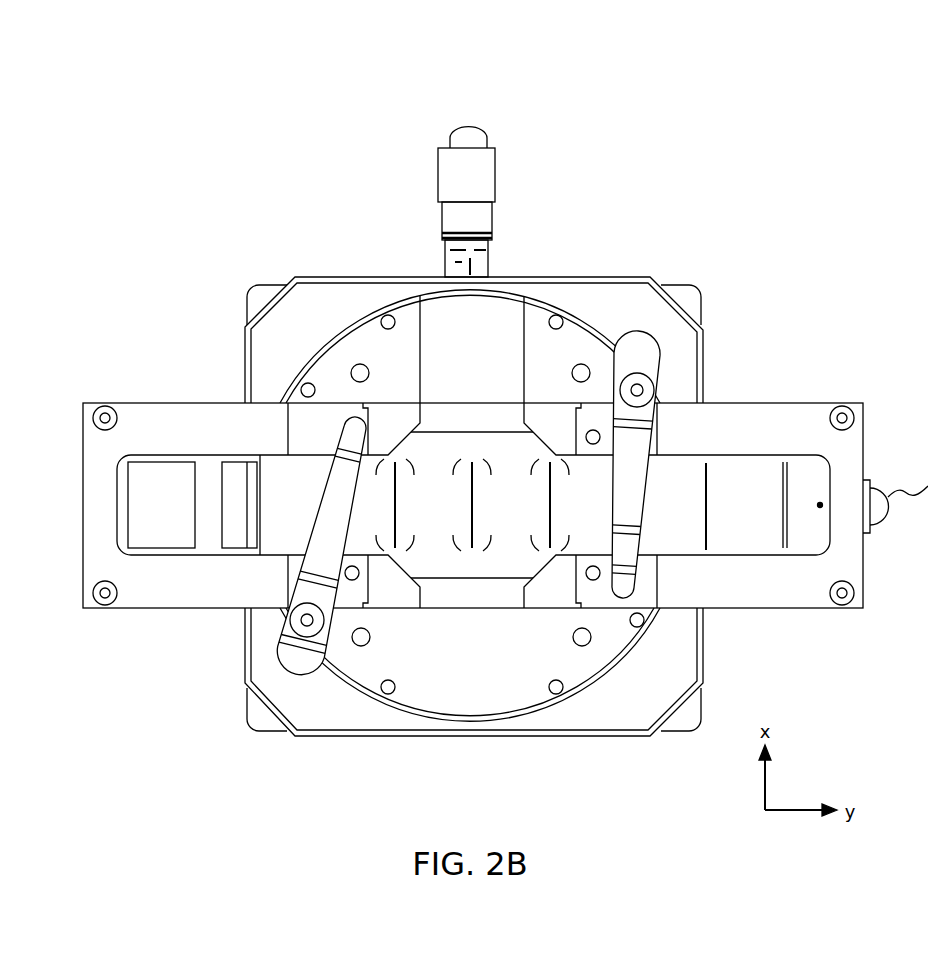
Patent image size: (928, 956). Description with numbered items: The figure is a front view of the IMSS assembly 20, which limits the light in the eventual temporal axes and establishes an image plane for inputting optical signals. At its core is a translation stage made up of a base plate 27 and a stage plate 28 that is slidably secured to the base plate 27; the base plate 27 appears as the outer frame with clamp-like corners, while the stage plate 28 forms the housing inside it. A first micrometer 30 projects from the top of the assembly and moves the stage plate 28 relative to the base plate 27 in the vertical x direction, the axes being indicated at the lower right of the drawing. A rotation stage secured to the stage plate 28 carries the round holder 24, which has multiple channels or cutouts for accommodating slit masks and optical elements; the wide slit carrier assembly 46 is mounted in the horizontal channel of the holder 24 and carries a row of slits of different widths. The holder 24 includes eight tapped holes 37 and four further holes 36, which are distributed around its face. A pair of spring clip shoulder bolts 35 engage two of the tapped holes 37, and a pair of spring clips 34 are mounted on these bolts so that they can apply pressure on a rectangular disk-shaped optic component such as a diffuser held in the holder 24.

The IMSS assembly 20 is at (205, 95).
The holder 24 is at (588, 338).
The base plate 27 is at (258, 298).
The stage plate 28 is at (257, 365).
The first micrometer 30 is at (474, 133).
The spring clip 34 is at (660, 372).
The spring clip shoulder bolt 35 is at (641, 380).
The holes 36 is at (360, 363).
The tapped holes 37 is at (556, 315).
The slit carrier assembly 46 is at (141, 402).